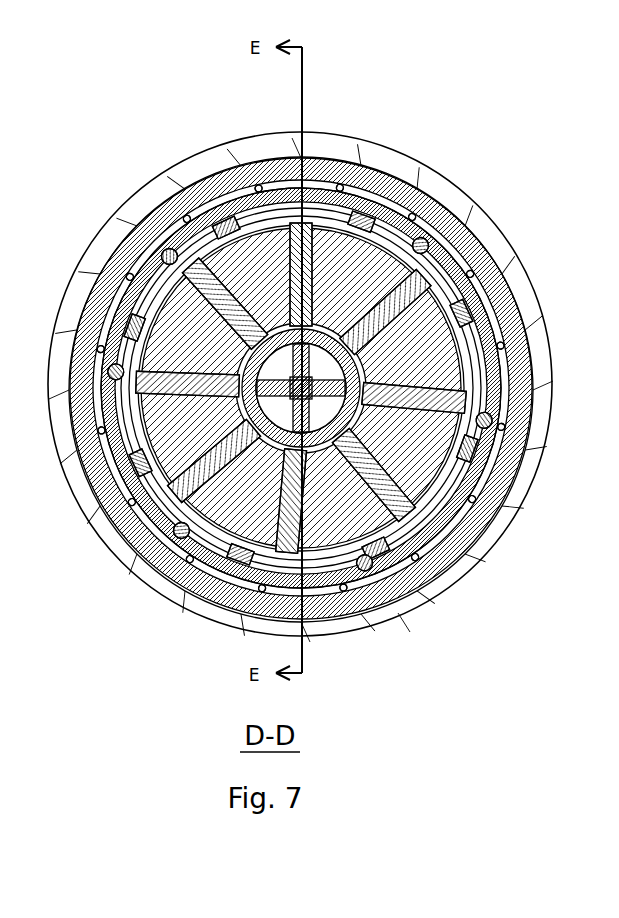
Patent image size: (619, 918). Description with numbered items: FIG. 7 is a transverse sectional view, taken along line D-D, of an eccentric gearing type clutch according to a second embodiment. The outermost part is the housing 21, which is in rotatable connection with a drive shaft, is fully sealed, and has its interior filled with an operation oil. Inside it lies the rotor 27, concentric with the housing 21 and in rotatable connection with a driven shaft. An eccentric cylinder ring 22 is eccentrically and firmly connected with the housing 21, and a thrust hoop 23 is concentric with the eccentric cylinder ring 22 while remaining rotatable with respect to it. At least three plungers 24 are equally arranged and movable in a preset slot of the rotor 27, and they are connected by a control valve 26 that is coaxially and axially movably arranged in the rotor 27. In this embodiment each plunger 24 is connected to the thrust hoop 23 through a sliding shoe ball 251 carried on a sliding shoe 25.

The housing 21 is at (183, 180).
The eccentric cylinder ring 22 is at (457, 212).
The thrust hoop 23 is at (477, 268).
The plunger 24 is at (330, 237).
The sliding shoe 25 is at (305, 130).
The sliding shoe ball 251 is at (405, 608).
The control valve 26 is at (524, 320).
The rotor 27 is at (175, 560).